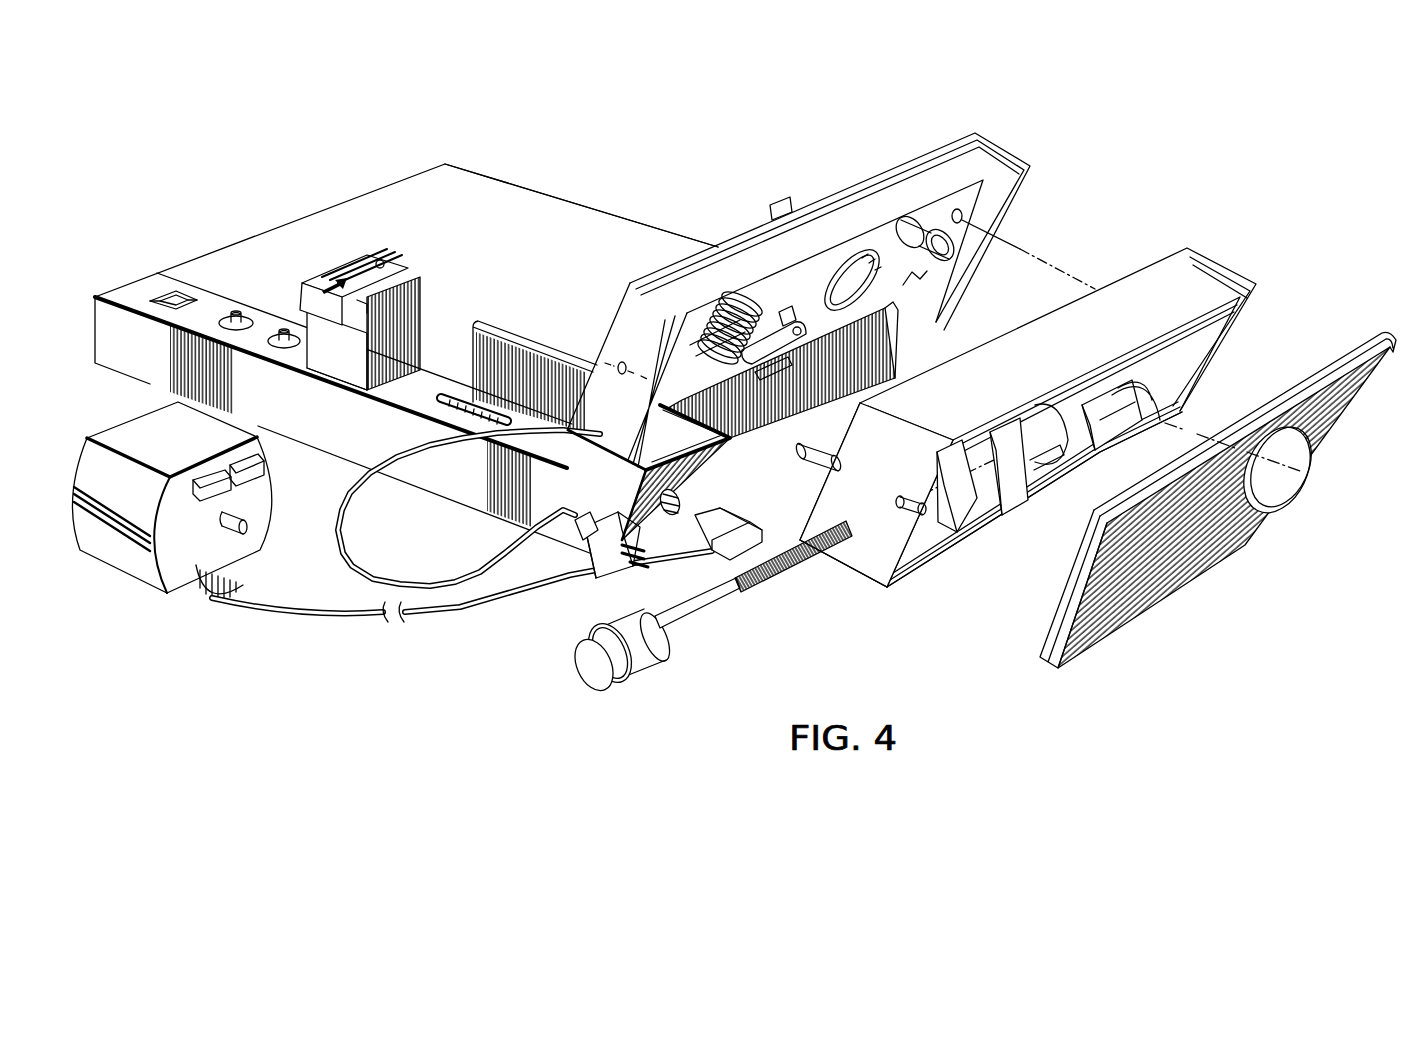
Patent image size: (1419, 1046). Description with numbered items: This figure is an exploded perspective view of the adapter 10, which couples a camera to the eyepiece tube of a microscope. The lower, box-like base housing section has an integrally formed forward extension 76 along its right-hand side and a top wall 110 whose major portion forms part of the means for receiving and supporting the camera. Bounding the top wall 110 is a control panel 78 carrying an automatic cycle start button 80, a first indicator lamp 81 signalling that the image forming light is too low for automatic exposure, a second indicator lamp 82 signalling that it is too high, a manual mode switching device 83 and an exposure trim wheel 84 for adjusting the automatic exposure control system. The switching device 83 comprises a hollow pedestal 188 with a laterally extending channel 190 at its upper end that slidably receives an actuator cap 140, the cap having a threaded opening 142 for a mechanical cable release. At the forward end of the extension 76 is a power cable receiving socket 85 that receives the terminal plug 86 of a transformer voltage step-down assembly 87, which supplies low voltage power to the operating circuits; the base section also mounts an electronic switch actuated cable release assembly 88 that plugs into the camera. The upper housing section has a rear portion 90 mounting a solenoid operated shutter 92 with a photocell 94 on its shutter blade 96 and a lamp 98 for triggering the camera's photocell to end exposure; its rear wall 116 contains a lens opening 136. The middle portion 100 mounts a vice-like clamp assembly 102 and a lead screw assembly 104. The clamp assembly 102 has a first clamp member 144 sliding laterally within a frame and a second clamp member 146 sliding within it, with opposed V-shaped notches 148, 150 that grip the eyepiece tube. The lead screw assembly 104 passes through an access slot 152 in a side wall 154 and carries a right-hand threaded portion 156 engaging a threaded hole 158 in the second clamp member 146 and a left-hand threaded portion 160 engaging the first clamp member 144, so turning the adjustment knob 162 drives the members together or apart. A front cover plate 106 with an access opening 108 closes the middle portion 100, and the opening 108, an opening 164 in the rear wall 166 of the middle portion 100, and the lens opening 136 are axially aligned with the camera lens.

The adapter 10 is at (1162, 151).
The forward extension 76 is at (665, 540).
The control panel 78 is at (397, 393).
The automatic cycle start button 80 is at (178, 292).
The first indicator lamp 81 is at (237, 313).
The second indicator lamp 82 is at (285, 328).
The manual mode switching device 83 is at (377, 320).
The exposure trim wheel 84 is at (463, 397).
The power cable receiving socket 85 is at (676, 494).
The terminal plug 86 is at (727, 525).
The transformer voltage step-down assembly 87 is at (175, 582).
The electronic switch actuated cable release assembly 88 is at (565, 568).
The rear portion 90 is at (1005, 133).
The solenoid operated shutter 92 is at (838, 311).
The photocell 94 is at (790, 313).
The shutter blade 96 is at (818, 300).
The lamp 98 is at (937, 235).
The middle portion 100 is at (1237, 258).
The clamp assembly 102 is at (1034, 514).
The lead screw assembly 104 is at (798, 590).
The front cover plate 106 is at (1224, 500).
The access opening 108 is at (1268, 488).
The top wall 110 is at (595, 228).
The rear wall 116 is at (890, 277).
The lens opening 136 is at (848, 265).
The actuator cap 140 is at (318, 277).
The threaded opening 142 is at (381, 260).
The first clamp member 144 is at (980, 513).
The second clamp member 146 is at (1045, 485).
The V-shaped notch 148 is at (1120, 392).
The V-shaped notch 150 is at (1057, 455).
The access slot 152 is at (900, 510).
The side wall 154 is at (843, 492).
The right-hand threaded portion 156 is at (817, 560).
The threaded hole 158 is at (1035, 450).
The left-hand threaded portion 160 is at (768, 583).
The adjustment knob 162 is at (957, 483).
The opening 164 is at (1110, 420).
The rear wall 166 is at (1075, 445).
The pedestal 188 is at (352, 373).
The channel 190 is at (360, 310).